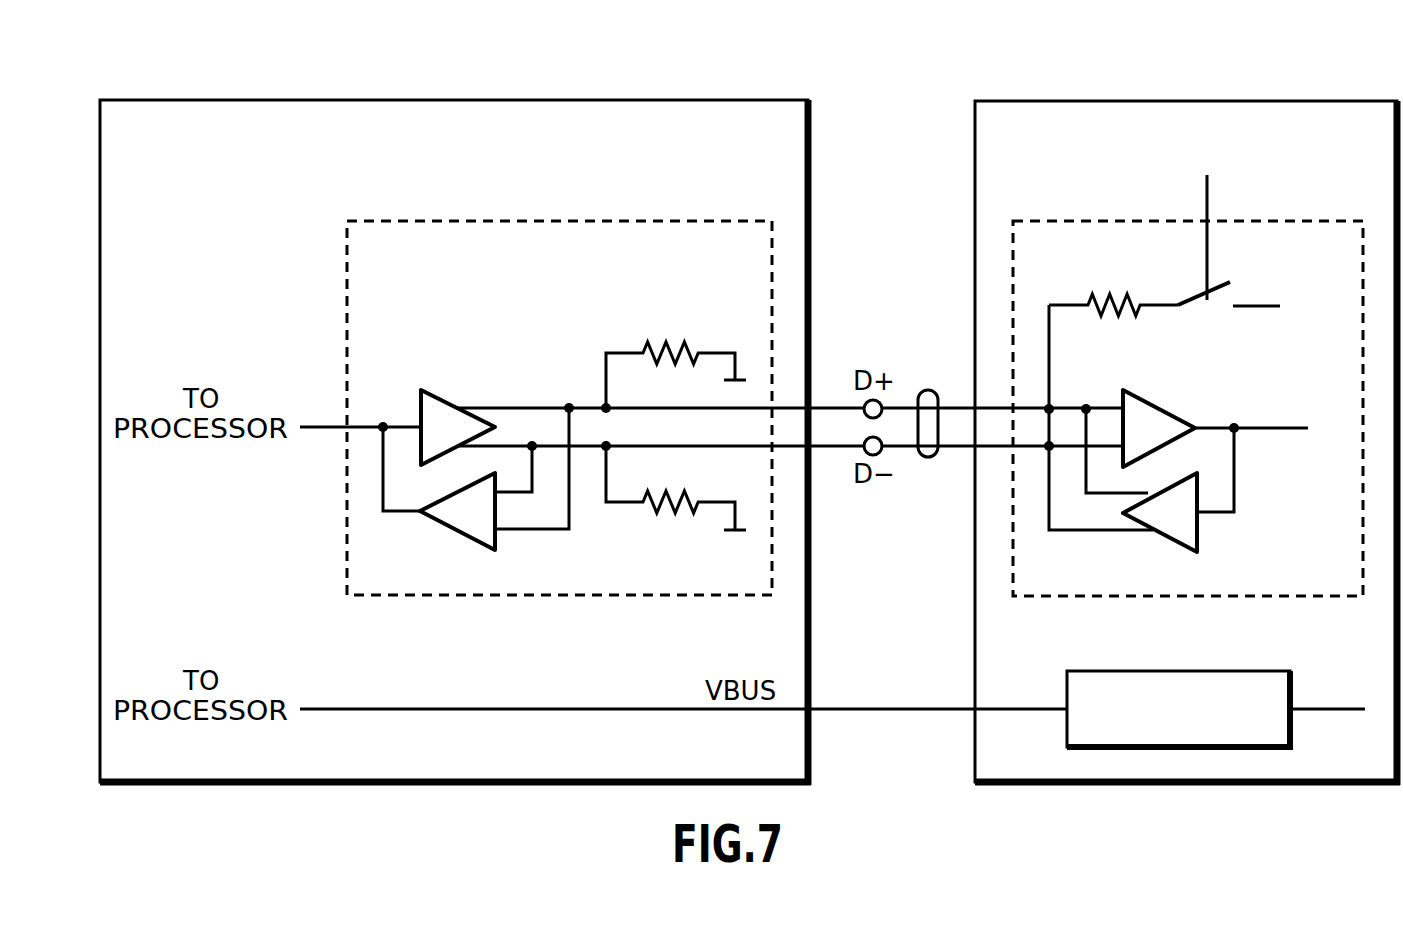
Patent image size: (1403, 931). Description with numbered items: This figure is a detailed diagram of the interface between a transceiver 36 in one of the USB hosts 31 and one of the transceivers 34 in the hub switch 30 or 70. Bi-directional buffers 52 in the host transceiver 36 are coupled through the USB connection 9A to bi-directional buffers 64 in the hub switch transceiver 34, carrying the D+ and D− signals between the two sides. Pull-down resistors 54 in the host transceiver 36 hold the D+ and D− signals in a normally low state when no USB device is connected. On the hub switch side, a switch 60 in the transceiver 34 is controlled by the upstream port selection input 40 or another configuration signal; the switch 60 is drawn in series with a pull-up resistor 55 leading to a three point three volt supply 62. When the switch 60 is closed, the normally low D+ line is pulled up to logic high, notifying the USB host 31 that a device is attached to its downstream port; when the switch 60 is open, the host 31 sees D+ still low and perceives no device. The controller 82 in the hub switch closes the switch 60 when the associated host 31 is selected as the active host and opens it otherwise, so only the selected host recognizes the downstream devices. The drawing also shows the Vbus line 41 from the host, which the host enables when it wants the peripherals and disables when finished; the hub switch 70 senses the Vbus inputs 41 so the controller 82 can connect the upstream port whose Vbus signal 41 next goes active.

The USB host 31 is at (440, 100).
The hub switch 30 is at (1187, 407).
The hub switch 70 is at (1197, 101).
The transceiver 36 is at (716, 221).
The bi-directional buffers 52 is at (442, 400).
The pull-down resistors 54 is at (670, 343).
The USB connection 9A is at (928, 390).
The Vbus output 41 is at (890, 709).
The controller 82 is at (1093, 671).
The upstream port selection input 40 is at (1325, 709).
The transceiver 34 is at (1306, 221).
The 1.5K pull-up resistor 55 is at (1114, 296).
The switch 60 is at (1200, 306).
The 3.3V supply 62 is at (1262, 306).
The bi-directional buffers 64 is at (1162, 393).